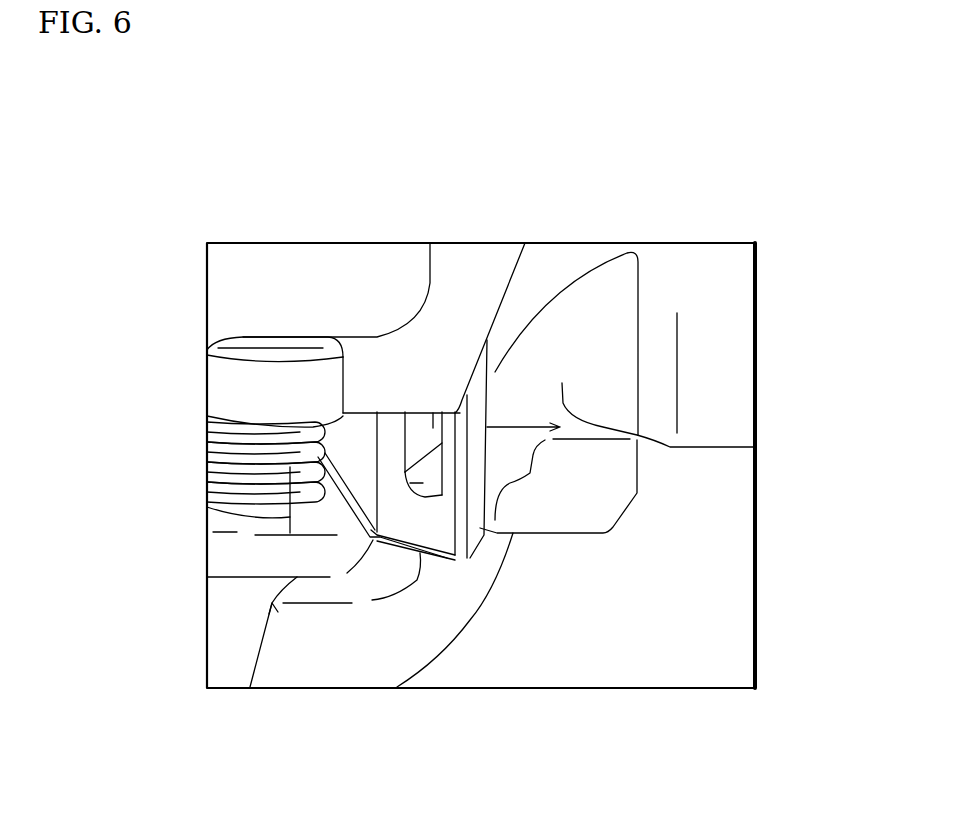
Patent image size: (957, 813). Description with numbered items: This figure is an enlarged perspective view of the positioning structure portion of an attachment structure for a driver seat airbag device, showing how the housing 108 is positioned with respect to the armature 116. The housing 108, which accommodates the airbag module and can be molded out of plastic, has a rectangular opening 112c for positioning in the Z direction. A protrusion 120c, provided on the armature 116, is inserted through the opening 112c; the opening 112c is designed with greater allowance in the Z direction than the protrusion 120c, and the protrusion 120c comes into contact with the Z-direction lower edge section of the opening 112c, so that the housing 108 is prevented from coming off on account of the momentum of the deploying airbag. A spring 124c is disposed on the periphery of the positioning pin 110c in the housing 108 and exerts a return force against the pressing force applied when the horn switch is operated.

The housing 108 is at (474, 263).
The opening 112c is at (407, 426).
The armature 116 is at (738, 273).
The spring 124c is at (207, 440).
The positioning pin 110c is at (207, 510).
The protrusion 120c is at (433, 495).